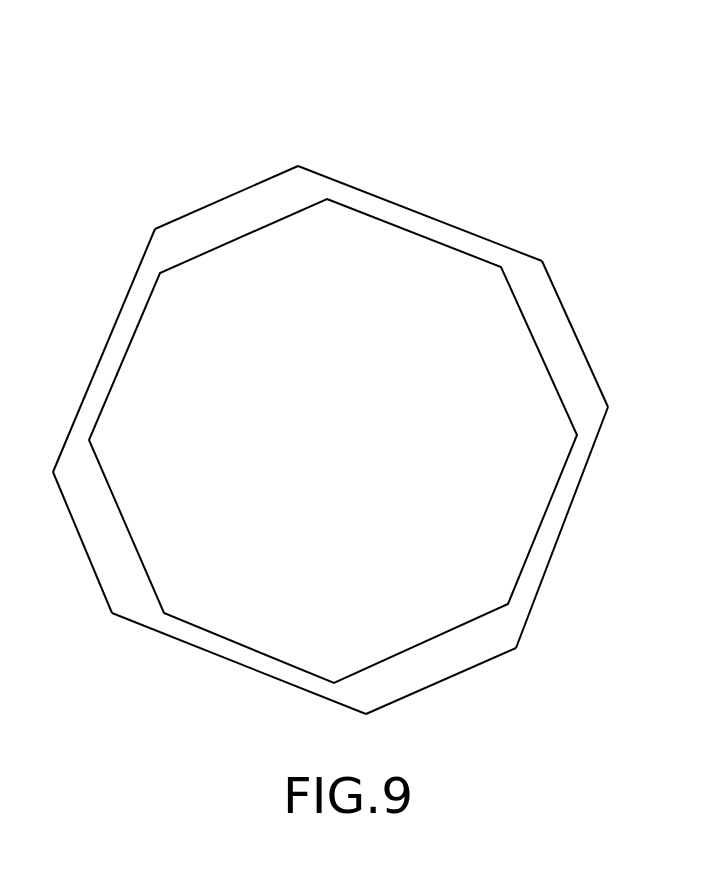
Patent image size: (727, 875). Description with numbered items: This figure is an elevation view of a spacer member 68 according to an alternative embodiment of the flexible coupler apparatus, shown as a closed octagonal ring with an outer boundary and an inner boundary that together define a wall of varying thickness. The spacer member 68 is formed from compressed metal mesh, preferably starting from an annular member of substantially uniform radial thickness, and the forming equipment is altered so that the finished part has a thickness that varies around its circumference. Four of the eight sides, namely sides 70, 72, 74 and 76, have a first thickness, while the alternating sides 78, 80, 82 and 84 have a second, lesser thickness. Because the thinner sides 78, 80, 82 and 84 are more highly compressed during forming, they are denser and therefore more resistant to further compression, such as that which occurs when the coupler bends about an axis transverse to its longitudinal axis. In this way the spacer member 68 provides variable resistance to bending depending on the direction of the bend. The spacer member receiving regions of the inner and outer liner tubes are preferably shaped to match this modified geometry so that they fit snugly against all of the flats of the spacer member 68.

The spacer member 68 is at (209, 103).
The side 70 is at (230, 220).
The side 72 is at (557, 337).
The side 74 is at (413, 672).
The side 76 is at (98, 537).
The side 78 is at (385, 210).
The side 80 is at (548, 527).
The side 82 is at (232, 652).
The side 84 is at (113, 360).